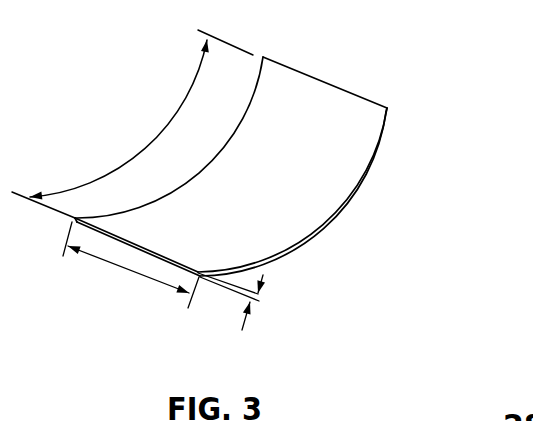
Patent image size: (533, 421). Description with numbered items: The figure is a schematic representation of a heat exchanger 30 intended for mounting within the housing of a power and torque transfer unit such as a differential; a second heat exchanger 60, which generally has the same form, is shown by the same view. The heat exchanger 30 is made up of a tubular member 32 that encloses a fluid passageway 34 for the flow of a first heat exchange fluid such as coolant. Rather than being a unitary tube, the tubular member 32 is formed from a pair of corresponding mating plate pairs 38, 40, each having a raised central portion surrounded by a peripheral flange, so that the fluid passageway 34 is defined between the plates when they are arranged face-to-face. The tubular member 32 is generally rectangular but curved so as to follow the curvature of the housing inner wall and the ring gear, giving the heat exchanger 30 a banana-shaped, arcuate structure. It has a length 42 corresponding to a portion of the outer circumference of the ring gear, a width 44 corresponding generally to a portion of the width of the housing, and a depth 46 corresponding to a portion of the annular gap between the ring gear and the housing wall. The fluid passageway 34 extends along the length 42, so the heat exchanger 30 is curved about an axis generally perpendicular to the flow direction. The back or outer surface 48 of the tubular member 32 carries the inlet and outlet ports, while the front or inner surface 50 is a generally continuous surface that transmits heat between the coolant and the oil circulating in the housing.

The first heat exchanger 30 is at (402, 54).
The second heat exchanger 60 is at (271, 183).
The tubular member 32 is at (237, 127).
The fluid passageway 34 is at (348, 197).
The mating plate pair 38 is at (387, 106).
The mating plate pair 40 is at (389, 108).
The length 42 is at (139, 153).
The width 44 is at (128, 275).
The depth 46 is at (242, 330).
The outer surface 48 is at (298, 252).
The inner surface 50 is at (283, 197).